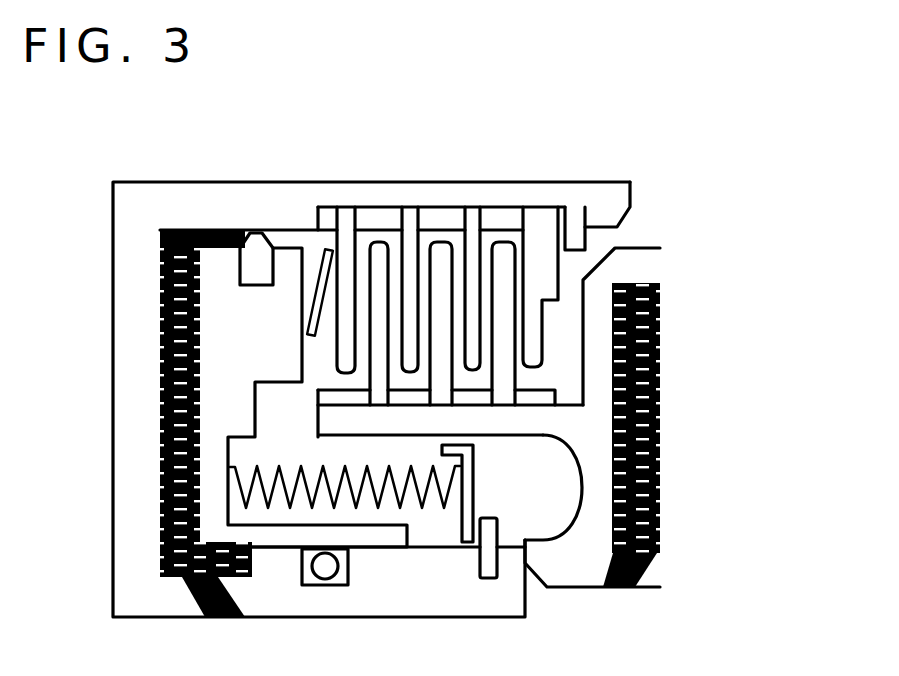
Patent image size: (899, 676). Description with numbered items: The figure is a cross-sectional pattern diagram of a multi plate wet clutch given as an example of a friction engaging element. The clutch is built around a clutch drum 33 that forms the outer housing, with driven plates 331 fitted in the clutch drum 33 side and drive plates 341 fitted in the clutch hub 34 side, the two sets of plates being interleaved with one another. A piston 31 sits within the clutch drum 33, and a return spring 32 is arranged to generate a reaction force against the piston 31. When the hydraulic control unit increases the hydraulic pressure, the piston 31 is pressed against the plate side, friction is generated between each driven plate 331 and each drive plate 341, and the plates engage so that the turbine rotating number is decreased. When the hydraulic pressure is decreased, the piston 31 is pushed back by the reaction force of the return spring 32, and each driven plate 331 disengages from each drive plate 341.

The clutch drum 33 is at (150, 190).
The piston 31 is at (297, 253).
The driven plates 331 is at (355, 207).
The drive plates 341 is at (378, 402).
The clutch hub 34 is at (638, 247).
The return spring 32 is at (445, 483).